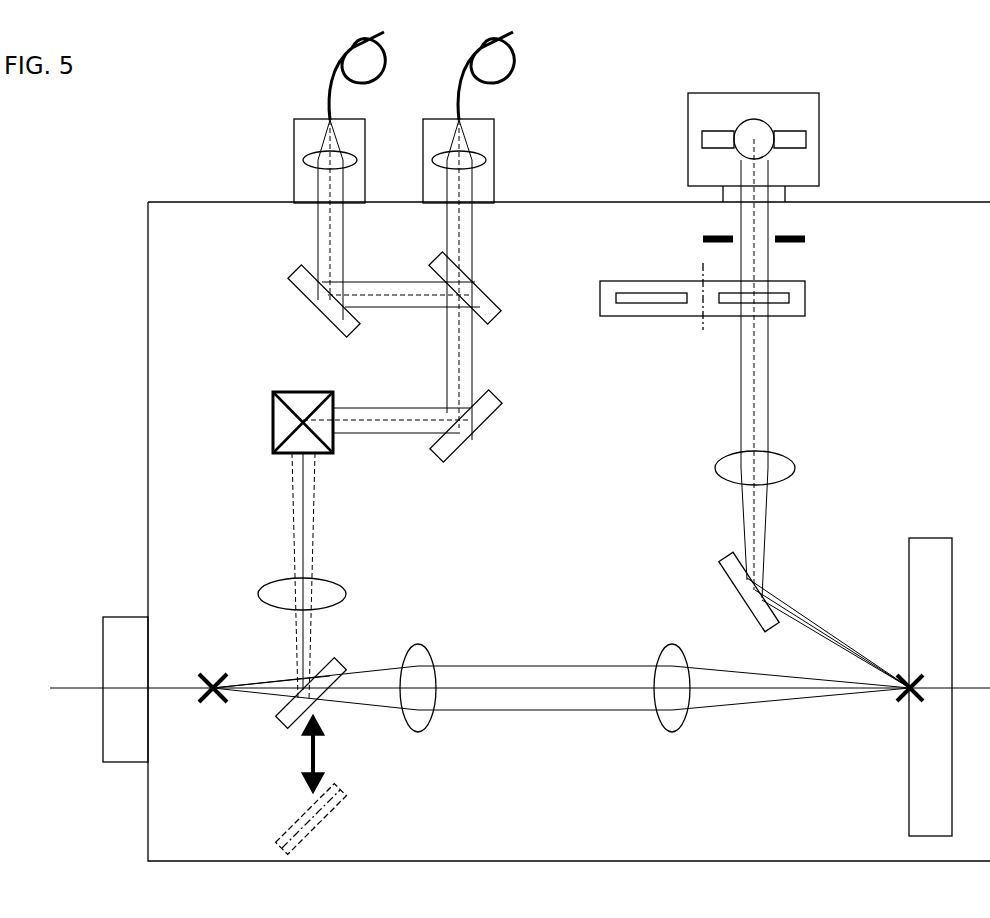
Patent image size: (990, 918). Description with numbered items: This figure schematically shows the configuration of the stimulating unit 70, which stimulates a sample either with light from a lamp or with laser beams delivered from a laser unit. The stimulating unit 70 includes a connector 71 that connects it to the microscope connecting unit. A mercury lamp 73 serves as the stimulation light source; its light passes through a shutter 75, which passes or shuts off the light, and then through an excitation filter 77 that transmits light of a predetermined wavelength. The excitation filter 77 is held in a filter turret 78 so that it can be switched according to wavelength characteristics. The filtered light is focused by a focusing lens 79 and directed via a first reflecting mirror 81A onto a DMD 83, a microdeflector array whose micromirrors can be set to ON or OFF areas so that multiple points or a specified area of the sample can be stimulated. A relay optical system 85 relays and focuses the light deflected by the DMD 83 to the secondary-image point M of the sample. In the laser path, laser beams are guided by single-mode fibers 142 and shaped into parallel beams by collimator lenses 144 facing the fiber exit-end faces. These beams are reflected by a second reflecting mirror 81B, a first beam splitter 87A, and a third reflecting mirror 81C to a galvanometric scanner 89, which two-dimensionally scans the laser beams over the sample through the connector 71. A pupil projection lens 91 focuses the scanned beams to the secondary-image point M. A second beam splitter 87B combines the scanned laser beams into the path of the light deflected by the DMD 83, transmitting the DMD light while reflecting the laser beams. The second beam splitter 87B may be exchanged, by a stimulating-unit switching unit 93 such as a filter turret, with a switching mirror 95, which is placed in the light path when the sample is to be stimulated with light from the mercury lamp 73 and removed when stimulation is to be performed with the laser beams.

The stimulating unit 70 is at (108, 207).
The connector 71 is at (125, 763).
The mercury lamp 73 is at (782, 93).
The shutter 75 is at (795, 238).
The excitation filter 77 is at (783, 304).
The filter turret 78 is at (652, 281).
The focusing lens 79 is at (785, 457).
The first reflecting mirror 81A is at (725, 560).
The second reflecting mirror 81B is at (300, 270).
The third reflecting mirror 81C is at (480, 436).
The DMD 83 is at (930, 538).
The relay optical system 85 is at (672, 633).
The first beam splitter 87A is at (434, 258).
The second beam splitter 87B is at (340, 660).
The galvanometric scanner 89 is at (272, 412).
The pupil projection lens 91 is at (330, 582).
The stimulating-unit switching unit 93 is at (318, 752).
The switching mirror 95 is at (330, 822).
The single-mode fiber 142 is at (375, 80).
The collimator lens 144 is at (305, 160).
The secondary-image point M is at (212, 706).